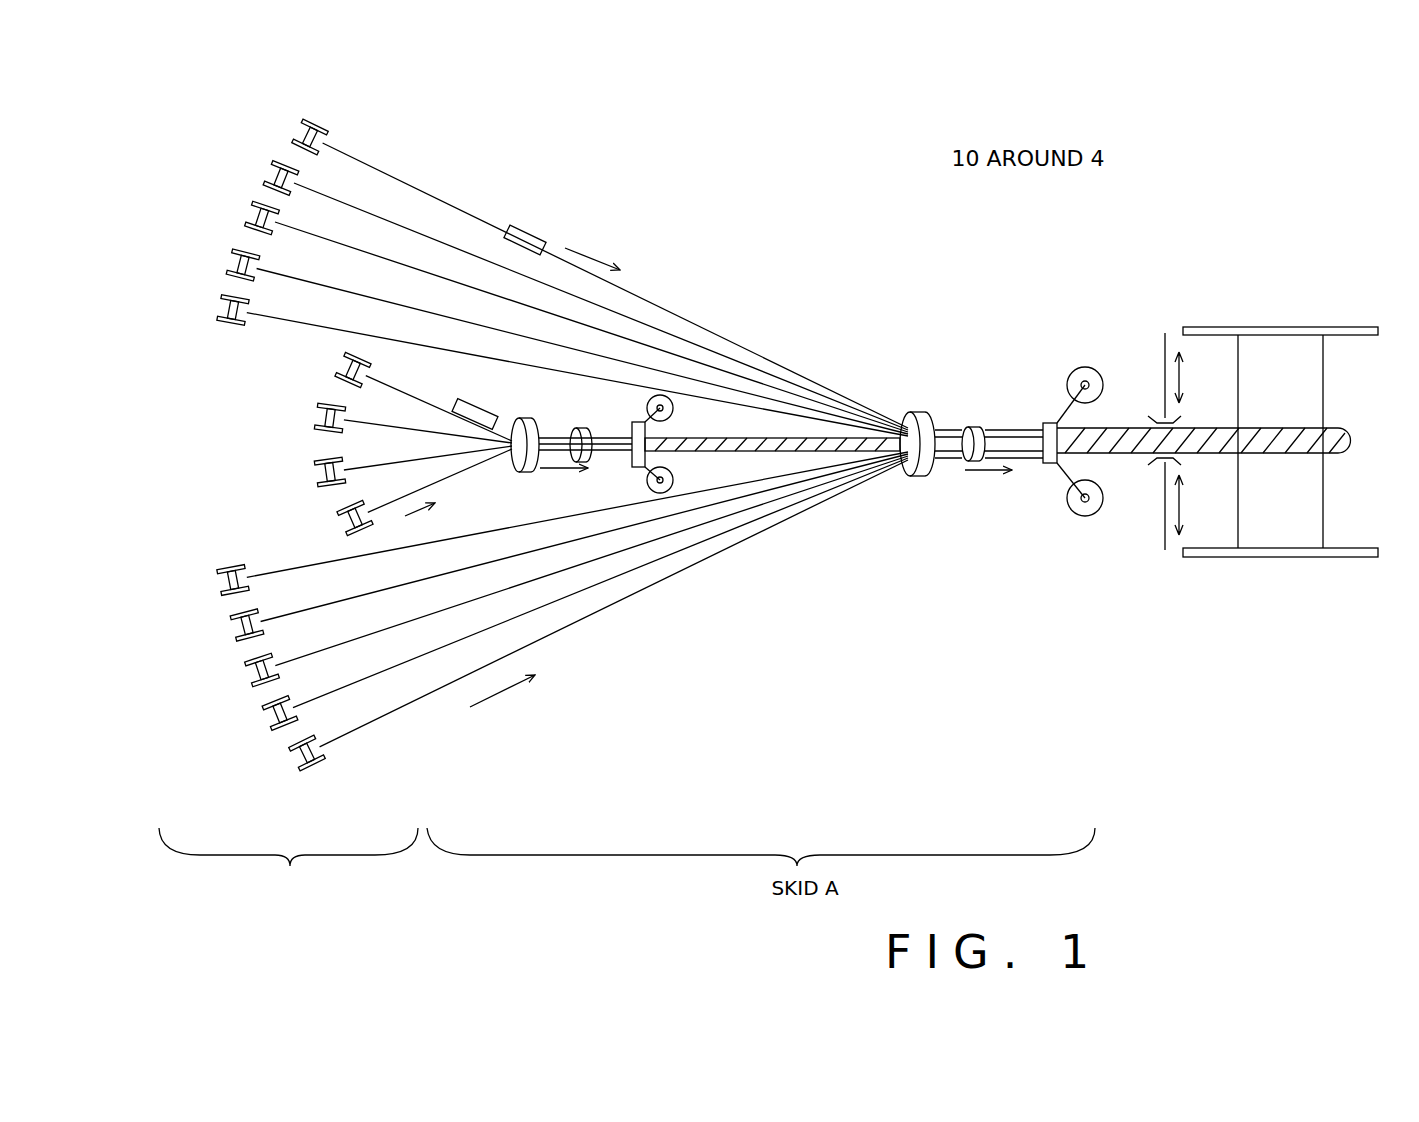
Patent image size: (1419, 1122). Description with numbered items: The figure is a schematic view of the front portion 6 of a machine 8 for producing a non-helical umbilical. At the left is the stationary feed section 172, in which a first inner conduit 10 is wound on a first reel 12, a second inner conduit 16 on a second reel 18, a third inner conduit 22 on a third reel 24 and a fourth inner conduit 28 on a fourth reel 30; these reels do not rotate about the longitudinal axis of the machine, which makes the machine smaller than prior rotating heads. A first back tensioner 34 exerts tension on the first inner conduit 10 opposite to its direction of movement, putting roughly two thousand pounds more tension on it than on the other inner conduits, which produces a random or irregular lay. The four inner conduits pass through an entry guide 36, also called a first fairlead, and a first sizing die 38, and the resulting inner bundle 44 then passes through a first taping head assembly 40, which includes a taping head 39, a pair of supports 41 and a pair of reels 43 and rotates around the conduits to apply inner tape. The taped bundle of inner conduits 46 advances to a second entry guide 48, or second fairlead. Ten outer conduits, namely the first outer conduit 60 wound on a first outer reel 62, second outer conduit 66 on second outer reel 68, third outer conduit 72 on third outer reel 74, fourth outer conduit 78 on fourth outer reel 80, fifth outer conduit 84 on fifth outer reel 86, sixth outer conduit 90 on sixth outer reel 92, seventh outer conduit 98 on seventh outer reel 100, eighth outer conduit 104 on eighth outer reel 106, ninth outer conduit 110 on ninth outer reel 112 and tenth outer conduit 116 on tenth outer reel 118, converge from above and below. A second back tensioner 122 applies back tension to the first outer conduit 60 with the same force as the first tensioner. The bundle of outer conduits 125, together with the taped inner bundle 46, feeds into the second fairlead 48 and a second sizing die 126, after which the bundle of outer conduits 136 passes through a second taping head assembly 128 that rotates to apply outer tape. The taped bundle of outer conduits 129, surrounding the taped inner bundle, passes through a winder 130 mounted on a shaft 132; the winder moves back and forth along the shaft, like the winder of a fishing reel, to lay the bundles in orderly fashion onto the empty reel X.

The front portion 6 is at (1115, 282).
The machine 8 is at (860, 212).
The first inner conduit 10 is at (380, 377).
The first reel 12 is at (343, 363).
The second inner conduit 16 is at (363, 422).
The second reel 18 is at (318, 412).
The third inner conduit 22 is at (362, 467).
The third reel 24 is at (318, 476).
The fourth inner conduit 28 is at (385, 510).
The fourth reel 30 is at (345, 527).
The first back tensioner 34 is at (480, 400).
The entry guide 36 is at (532, 418).
The first sizing die 38 is at (590, 428).
The taping head 39 is at (630, 463).
The first taping head assembly 40 is at (636, 404).
The supports 41 is at (642, 470).
The reels 43 is at (673, 487).
The inner bundle 44 is at (612, 438).
The taped bundle of inner conduits 46 is at (742, 438).
The second entry guide 48 is at (916, 478).
The first outer conduit 60 is at (378, 170).
The first outer reel 62 is at (322, 128).
The second outer conduit 66 is at (318, 193).
The second outer reel 68 is at (270, 168).
The third outer conduit 72 is at (293, 227).
The third outer reel 74 is at (252, 209).
The fourth outer conduit 78 is at (283, 273).
The fourth outer reel 80 is at (232, 258).
The fifth outer conduit 84 is at (272, 314).
The fifth outer reel 86 is at (223, 305).
The sixth outer conduit 90 is at (268, 573).
The sixth outer reel 92 is at (220, 576).
The seventh outer conduit 98 is at (283, 614).
The seventh outer reel 100 is at (235, 622).
The eighth outer conduit 104 is at (295, 660).
The eighth outer reel 106 is at (250, 676).
The ninth outer conduit 110 is at (320, 698).
The ninth outer reel 112 is at (268, 721).
The tenth outer conduit 116 is at (337, 735).
The tenth outer reel 118 is at (300, 766).
The second back tensioner 122 is at (545, 228).
The bundle of outer conduits 125 is at (892, 404).
The second sizing die 126 is at (975, 425).
The second taping head assembly 128 is at (1048, 402).
The taped bundle of outer conduits 129 is at (1352, 437).
The winder 130 is at (1158, 460).
The shaft 132 is at (1165, 515).
The bundle of outer conduits 136 is at (1012, 425).
The feed section 172 is at (288, 863).